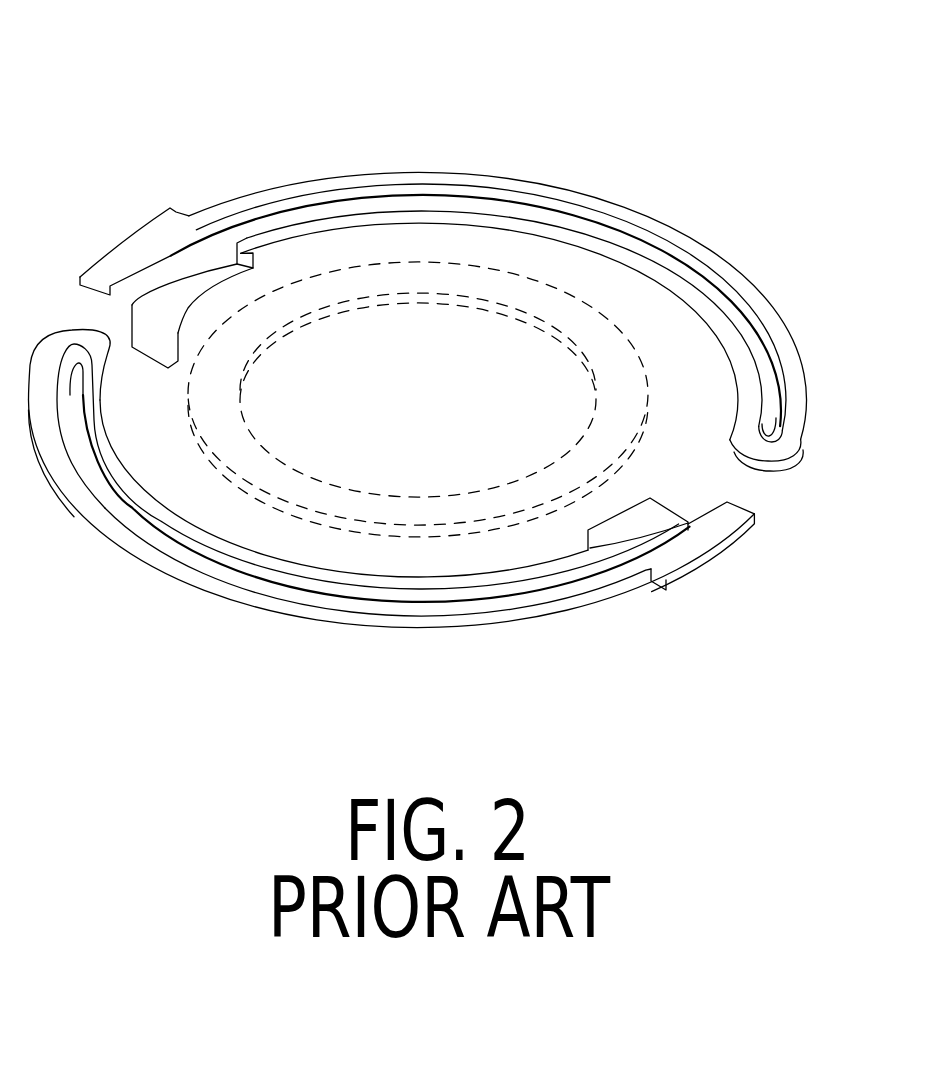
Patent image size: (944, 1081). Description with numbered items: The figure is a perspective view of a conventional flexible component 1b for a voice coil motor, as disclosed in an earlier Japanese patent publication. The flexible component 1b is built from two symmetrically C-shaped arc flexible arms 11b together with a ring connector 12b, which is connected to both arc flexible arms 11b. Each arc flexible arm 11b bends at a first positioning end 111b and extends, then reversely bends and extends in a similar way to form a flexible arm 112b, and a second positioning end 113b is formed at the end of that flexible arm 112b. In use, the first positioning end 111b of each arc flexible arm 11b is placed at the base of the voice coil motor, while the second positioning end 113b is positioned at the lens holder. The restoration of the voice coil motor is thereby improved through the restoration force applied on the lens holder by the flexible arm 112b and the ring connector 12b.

The flexible component 1b is at (780, 42).
The arc flexible arm 11b is at (444, 391).
The first positioning end 111b is at (695, 553).
The flexible arm 112b is at (163, 515).
The second positioning end 113b is at (642, 522).
The ring connector 12b is at (358, 268).